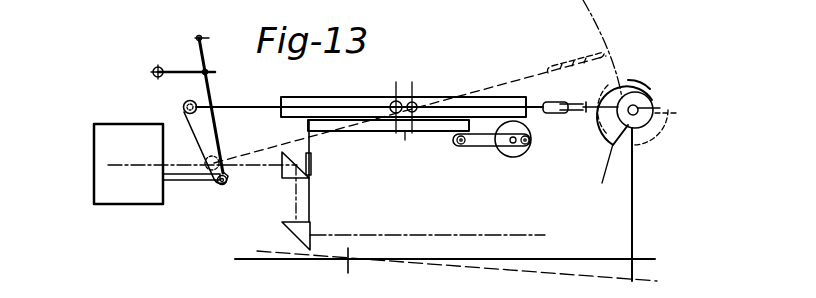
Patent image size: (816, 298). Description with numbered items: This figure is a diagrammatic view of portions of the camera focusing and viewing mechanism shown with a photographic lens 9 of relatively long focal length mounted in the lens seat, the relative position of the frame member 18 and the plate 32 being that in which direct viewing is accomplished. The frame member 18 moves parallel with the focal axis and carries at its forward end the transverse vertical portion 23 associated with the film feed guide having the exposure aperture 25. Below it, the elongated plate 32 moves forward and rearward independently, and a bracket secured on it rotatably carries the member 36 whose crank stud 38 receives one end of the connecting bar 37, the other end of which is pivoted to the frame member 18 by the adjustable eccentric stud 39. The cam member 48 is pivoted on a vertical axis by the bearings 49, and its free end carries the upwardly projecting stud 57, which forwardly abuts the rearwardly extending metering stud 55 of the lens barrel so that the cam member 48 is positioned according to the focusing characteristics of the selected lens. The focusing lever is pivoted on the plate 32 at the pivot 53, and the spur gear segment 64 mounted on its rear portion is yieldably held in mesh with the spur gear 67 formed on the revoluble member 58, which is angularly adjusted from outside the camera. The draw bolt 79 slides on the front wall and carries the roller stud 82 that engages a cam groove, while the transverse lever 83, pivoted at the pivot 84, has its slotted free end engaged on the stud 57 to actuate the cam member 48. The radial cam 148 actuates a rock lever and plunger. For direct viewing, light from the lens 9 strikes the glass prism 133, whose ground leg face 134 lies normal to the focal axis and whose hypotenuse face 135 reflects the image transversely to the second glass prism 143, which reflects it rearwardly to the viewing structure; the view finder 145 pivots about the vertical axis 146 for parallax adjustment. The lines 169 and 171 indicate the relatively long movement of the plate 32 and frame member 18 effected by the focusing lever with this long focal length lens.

The photographic lens 9 is at (94, 153).
The frame member 18 is at (378, 132).
The transverse vertical portion 23 is at (312, 144).
The exposure aperture 25 is at (312, 165).
The plate 32 is at (322, 97).
The member 36 is at (515, 157).
The connecting bar 37 is at (483, 146).
The crank stud 38 is at (530, 140).
The adjustable eccentric stud 39 is at (459, 145).
The cam member 48 is at (191, 128).
The bearings 49 is at (183, 107).
The pivotal mounting of focusing lever 53 is at (405, 140).
The metering stud 55 is at (192, 181).
The stud 57 is at (220, 186).
The revoluble member 58 is at (655, 106).
The spur gear segment 64 is at (607, 88).
The spur gear 67 is at (653, 96).
The draw bolt 79 is at (178, 71).
The roller stud 82 is at (157, 67).
The lever 83 is at (206, 56).
The pivot of lever 84 is at (200, 36).
The glass prism 133 is at (283, 180).
The leg face of prism 134 is at (281, 170).
The hypotenuse face of prism 135 is at (288, 144).
The second glass prism 143 is at (310, 222).
The view finder 145 is at (560, 258).
The pivotal axis of view finder 146 is at (349, 262).
The radial cam 148 is at (628, 80).
The line indicating movement 169 is at (396, 85).
The line indicating movement 171 is at (414, 86).